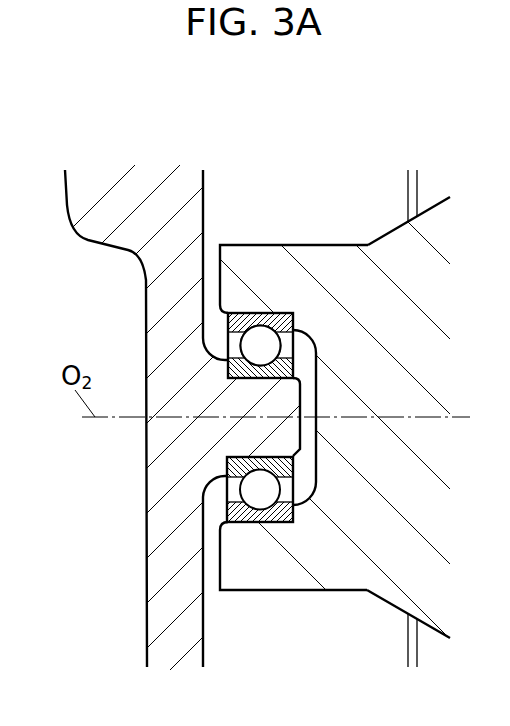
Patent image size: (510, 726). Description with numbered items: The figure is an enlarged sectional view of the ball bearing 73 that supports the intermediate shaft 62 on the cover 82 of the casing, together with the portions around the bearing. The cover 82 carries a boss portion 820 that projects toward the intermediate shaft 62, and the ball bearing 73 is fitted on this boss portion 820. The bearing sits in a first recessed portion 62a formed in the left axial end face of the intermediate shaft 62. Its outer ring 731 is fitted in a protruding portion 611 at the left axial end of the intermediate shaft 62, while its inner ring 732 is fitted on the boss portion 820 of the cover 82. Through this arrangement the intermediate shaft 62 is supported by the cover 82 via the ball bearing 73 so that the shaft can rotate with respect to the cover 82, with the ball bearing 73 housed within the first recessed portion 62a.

The cover 82 is at (95, 190).
The boss portion 820 is at (277, 433).
The protruding portion 611 is at (247, 272).
The intermediate shaft 62 is at (365, 292).
The first recessed portion 62a is at (298, 490).
The ball bearing 73 is at (228, 484).
The outer ring 731 is at (228, 327).
The inner ring 732 is at (226, 365).